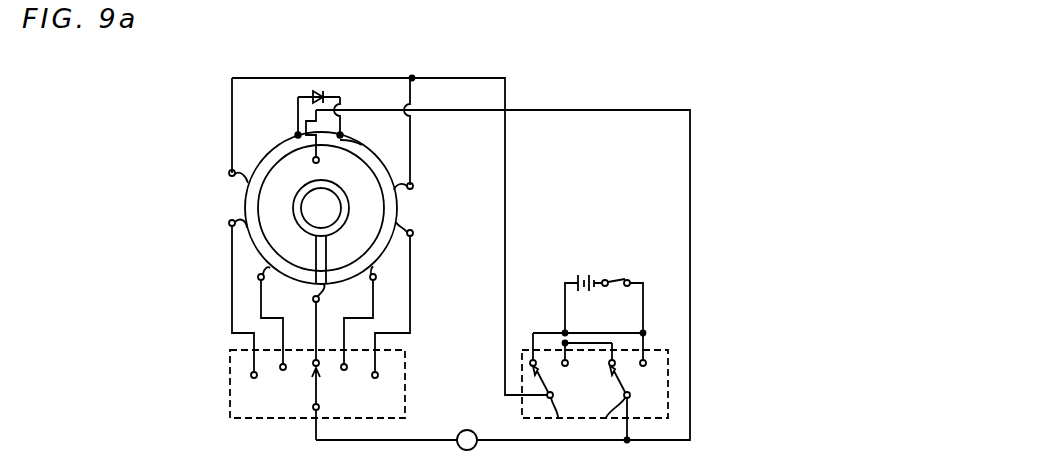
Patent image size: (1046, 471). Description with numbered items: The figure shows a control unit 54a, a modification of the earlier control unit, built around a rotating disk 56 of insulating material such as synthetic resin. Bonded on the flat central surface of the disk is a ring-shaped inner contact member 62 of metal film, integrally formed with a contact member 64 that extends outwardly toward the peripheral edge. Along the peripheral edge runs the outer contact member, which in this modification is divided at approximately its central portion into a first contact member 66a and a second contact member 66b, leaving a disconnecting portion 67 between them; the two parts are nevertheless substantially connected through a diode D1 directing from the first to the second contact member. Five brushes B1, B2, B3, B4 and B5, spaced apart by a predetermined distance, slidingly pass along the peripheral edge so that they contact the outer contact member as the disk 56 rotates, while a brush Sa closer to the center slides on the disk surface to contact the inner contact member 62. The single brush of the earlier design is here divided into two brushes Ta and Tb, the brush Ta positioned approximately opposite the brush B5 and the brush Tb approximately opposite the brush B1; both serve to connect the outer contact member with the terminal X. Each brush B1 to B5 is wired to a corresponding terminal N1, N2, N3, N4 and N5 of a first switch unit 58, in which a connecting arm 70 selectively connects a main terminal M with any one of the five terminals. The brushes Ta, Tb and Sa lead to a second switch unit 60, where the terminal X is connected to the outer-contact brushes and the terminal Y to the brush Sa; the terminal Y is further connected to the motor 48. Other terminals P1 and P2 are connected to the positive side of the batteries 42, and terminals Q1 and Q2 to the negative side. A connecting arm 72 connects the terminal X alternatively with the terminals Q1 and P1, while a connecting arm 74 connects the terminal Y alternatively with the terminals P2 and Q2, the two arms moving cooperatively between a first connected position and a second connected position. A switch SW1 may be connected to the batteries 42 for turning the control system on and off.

The control unit 54a is at (521, 51).
The diode D1 is at (320, 92).
The first contact member 66a is at (280, 145).
The disconnecting portion 67 is at (336, 133).
The second contact member 66b is at (362, 145).
The rotating disk 56 is at (277, 175).
The brush Ta is at (229, 174).
The brush Sa is at (319, 161).
The brush Tb is at (412, 189).
The brush B1 is at (229, 222).
The inner contact member 62 is at (294, 213).
The contact member 64 is at (316, 258).
The brush B2 is at (258, 277).
The brush B3 is at (313, 299).
The brush B4 is at (376, 278).
The brush B5 is at (413, 234).
The terminal Q1 is at (532, 359).
The terminal P1 is at (564, 360).
The terminal P2 is at (612, 360).
The terminal Q2 is at (644, 360).
The batteries 42 is at (578, 276).
The switch SW1 is at (620, 278).
The first switch unit 58 is at (230, 361).
The terminal N1 is at (251, 375).
The terminal N2 is at (280, 368).
The terminal N3 is at (319, 364).
The terminal N4 is at (347, 368).
The terminal N5 is at (378, 375).
The connecting arm 70 is at (315, 386).
The main terminal M is at (314, 409).
The motor 48 is at (459, 445).
The connecting arm 72 is at (540, 373).
The connecting arm 74 is at (616, 373).
The terminal X is at (560, 423).
The terminal Y is at (611, 423).
The second switch unit 60 is at (668, 373).